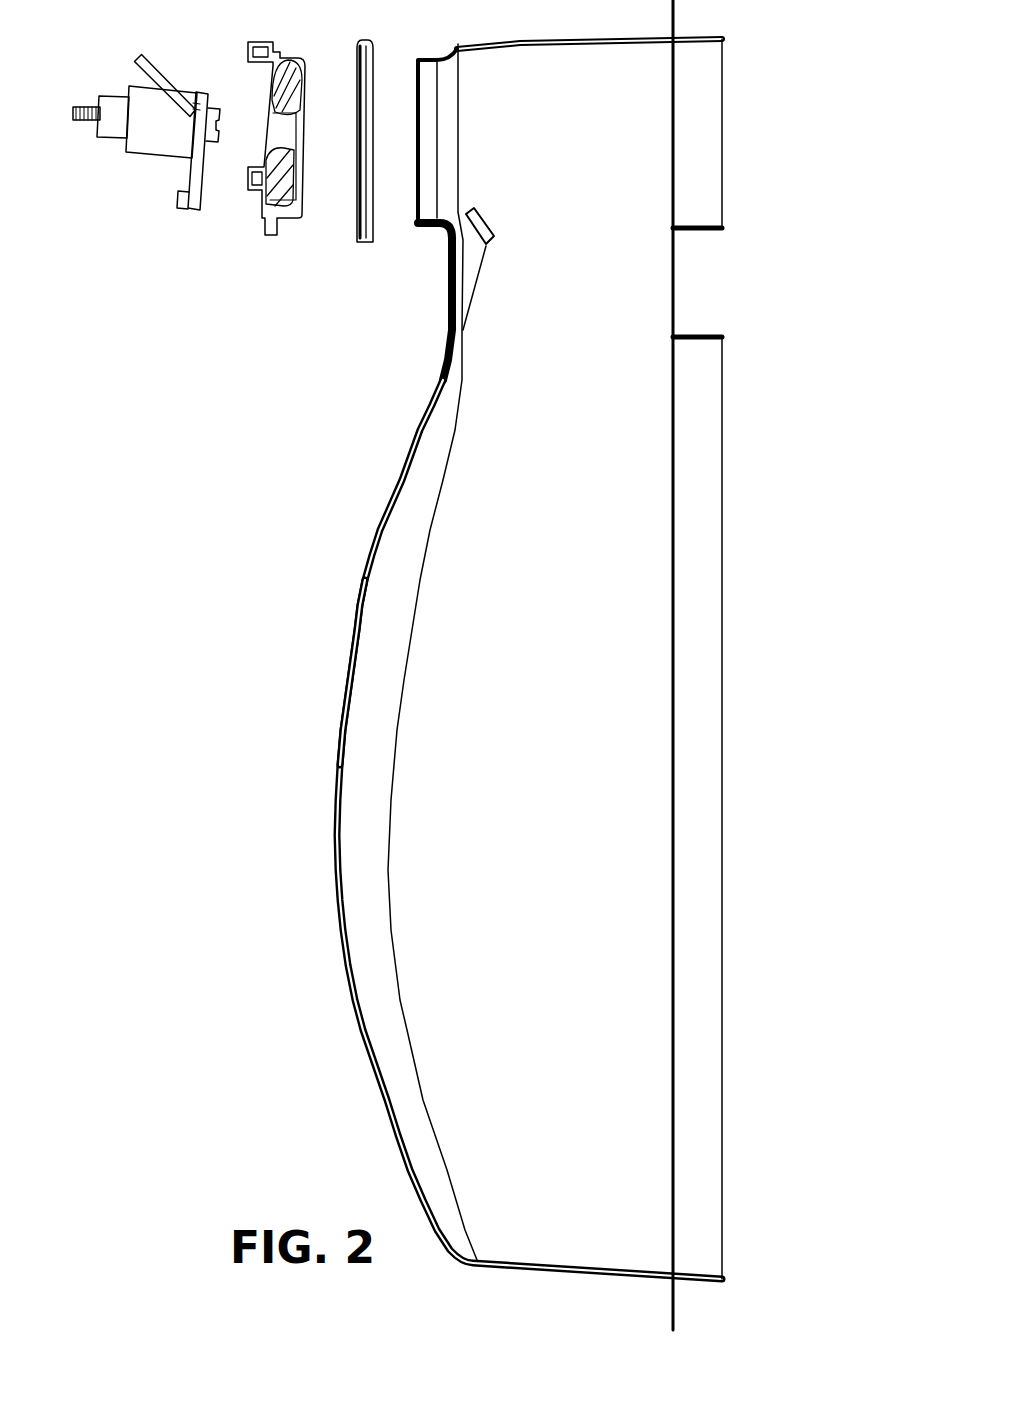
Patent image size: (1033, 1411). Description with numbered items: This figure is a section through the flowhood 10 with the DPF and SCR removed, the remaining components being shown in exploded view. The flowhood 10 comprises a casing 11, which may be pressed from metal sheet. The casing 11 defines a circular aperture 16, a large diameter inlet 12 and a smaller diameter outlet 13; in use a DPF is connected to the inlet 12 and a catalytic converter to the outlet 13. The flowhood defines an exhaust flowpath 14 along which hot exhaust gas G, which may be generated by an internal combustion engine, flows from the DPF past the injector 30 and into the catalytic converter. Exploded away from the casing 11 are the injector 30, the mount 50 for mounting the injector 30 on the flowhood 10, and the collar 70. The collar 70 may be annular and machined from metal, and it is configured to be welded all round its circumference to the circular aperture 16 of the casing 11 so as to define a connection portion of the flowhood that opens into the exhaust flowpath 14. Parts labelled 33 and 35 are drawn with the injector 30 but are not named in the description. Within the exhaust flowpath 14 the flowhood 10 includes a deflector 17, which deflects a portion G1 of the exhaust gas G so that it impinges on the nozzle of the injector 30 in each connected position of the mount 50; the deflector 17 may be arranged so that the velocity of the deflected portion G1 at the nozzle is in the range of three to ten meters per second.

The flowhood 10 is at (357, 1014).
The casing 11 is at (353, 644).
The large diameter inlet 12 is at (744, 768).
The smaller diameter outlet 13 is at (742, 127).
The exhaust flowpath 14 is at (592, 600).
The circular aperture 16 is at (411, 96).
The deflector 17 is at (481, 226).
The injector 30 is at (162, 213).
The connector 33 is at (75, 98).
The rod 35 is at (140, 53).
The mount 50 is at (281, 246).
The collar 70 is at (365, 246).
The exhaust gas G is at (712, 97).
The deflected portion of the exhaust gas G1 is at (447, 165).